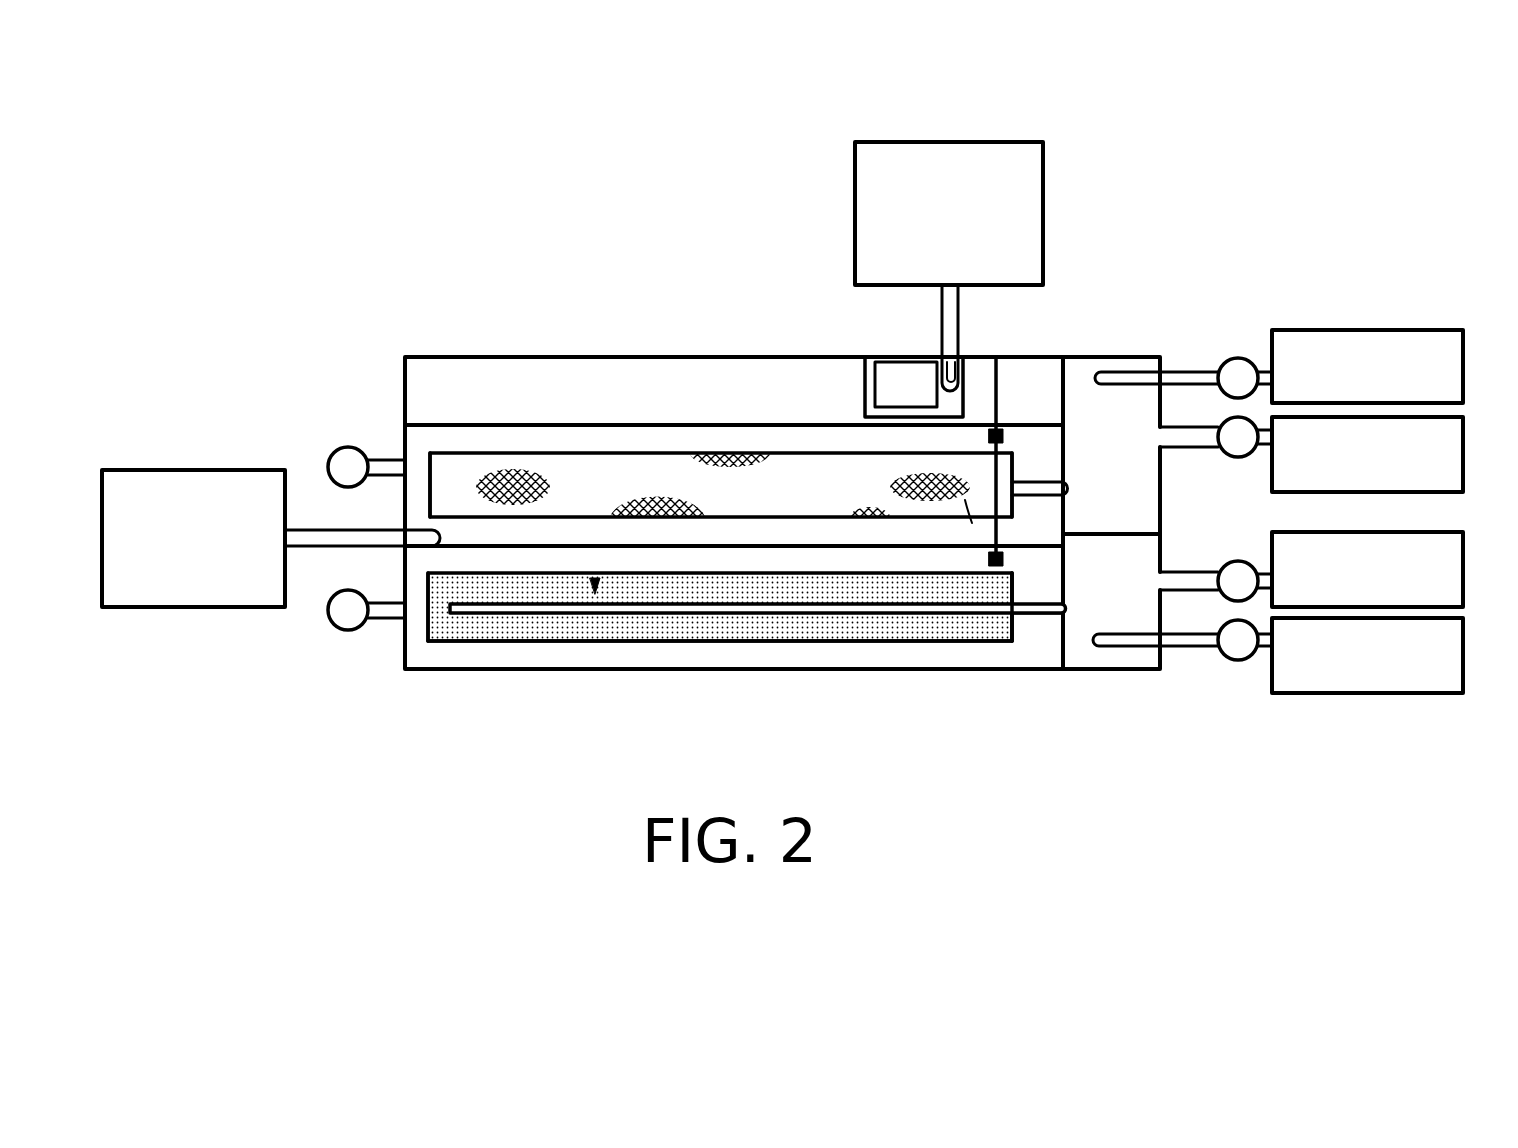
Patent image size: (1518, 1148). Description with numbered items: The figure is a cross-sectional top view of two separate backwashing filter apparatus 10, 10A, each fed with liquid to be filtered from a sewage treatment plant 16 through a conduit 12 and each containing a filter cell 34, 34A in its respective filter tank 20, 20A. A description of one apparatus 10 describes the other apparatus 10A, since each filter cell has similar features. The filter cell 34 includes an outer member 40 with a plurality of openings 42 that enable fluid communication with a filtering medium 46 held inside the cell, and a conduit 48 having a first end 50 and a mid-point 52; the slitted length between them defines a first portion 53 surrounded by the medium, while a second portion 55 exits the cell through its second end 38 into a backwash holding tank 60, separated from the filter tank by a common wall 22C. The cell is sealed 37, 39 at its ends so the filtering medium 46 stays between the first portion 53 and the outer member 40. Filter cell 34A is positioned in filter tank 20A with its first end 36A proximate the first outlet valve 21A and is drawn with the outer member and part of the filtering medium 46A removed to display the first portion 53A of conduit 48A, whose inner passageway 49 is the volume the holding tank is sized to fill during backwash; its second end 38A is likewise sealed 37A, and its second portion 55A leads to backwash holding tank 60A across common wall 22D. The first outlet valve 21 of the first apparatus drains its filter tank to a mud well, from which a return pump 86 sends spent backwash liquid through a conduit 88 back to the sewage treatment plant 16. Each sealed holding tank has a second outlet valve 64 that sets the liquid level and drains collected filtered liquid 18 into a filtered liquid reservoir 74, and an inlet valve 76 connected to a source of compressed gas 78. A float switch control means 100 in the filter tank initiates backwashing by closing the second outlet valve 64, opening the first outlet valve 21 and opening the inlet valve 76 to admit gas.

The liquid filter and backwashing apparatus 10 is at (710, 280).
The backwashing filter apparatus 10A is at (750, 713).
The conduit 12 is at (323, 528).
The sewage treatment plant 16 is at (140, 468).
The filtered liquid 18 is at (1082, 372).
The filter tank 20 is at (397, 427).
The filter tank 20A is at (392, 652).
The first outlet valve 21 is at (352, 447).
The first outlet valve 21A is at (337, 630).
The common wall 22C is at (700, 538).
The common wall 22D is at (1130, 530).
The filter cell 34 is at (720, 452).
The filter cell 34A is at (653, 643).
The first end 36A is at (420, 623).
The seal 37 is at (418, 485).
The seal 37A is at (428, 577).
The second end 38 is at (1008, 455).
The second end 38A is at (1020, 633).
The seal 39 is at (1020, 513).
The outer member 40 is at (900, 477).
The openings 42 is at (520, 467).
The filtering medium 46 is at (570, 465).
The filtering medium 46A is at (765, 578).
The conduit 48 is at (1067, 488).
The conduit 48A is at (1066, 608).
The inner passageway 49 is at (620, 615).
The first end 50 is at (457, 608).
The mid-point 52 is at (967, 617).
The first portion 53 is at (960, 527).
The first portion 53A is at (595, 578).
The second portion 55 is at (1057, 473).
The second portion 55A is at (1073, 623).
The backwash holding tank 60 is at (1160, 556).
The backwash holding tank 60A is at (1160, 668).
The second outlet valve 64 is at (1228, 420).
The filtered liquid reservoir 74 is at (1348, 532).
The inlet valve 76 is at (1225, 358).
The source of compressed gas 78 is at (1355, 330).
The return pump 86 is at (893, 358).
The conduit 88 is at (940, 325).
The float switch control means 100 is at (1000, 430).